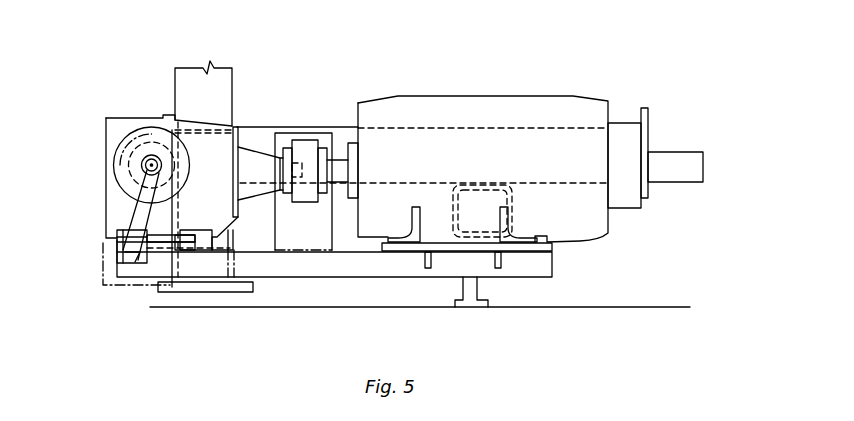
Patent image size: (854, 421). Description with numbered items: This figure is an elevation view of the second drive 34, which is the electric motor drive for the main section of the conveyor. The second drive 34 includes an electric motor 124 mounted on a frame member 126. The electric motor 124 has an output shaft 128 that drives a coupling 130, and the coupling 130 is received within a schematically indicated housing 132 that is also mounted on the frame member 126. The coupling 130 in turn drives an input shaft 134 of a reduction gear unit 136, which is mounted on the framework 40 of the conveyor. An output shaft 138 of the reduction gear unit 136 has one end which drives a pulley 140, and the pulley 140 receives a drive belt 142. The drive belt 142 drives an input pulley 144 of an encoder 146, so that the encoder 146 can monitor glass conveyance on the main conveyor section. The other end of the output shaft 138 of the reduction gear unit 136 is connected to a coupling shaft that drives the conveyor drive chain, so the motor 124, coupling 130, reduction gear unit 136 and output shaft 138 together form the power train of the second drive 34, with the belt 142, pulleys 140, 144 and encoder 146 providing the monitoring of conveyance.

The second drive 34 is at (426, 42).
The framework 40 is at (173, 88).
The electric motor 124 is at (475, 97).
The frame member 126 is at (302, 267).
The output shaft 128 is at (345, 167).
The coupling 130 is at (302, 158).
The housing 132 is at (262, 143).
The input shaft 134 is at (287, 195).
The reduction gear unit 136 is at (126, 127).
The output shaft 138 is at (148, 163).
The pulley 140 is at (142, 167).
The drive belt 142 is at (134, 196).
The input pulley 144 is at (115, 252).
The encoder 146 is at (138, 250).